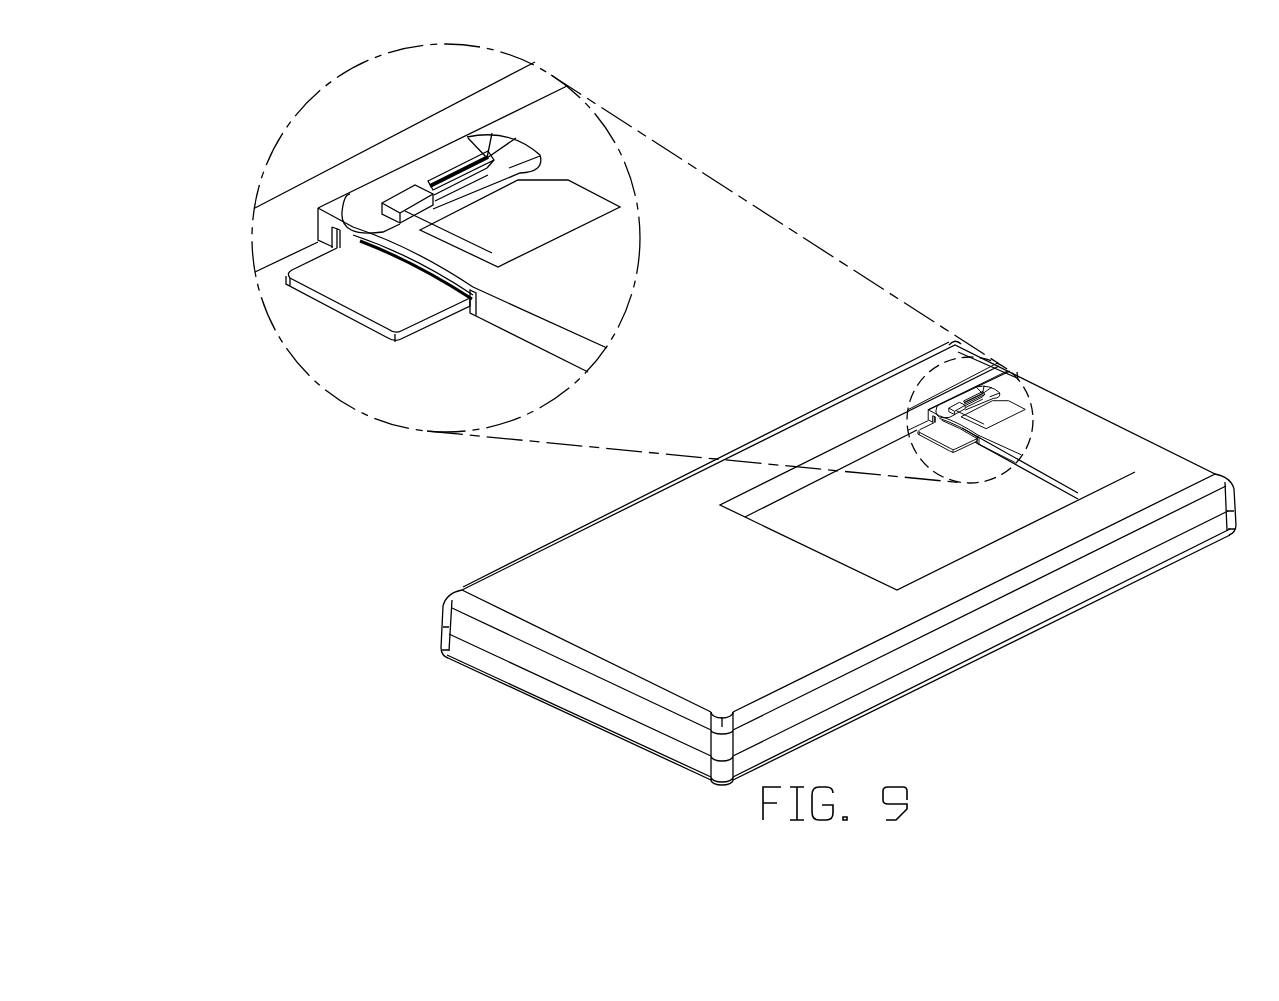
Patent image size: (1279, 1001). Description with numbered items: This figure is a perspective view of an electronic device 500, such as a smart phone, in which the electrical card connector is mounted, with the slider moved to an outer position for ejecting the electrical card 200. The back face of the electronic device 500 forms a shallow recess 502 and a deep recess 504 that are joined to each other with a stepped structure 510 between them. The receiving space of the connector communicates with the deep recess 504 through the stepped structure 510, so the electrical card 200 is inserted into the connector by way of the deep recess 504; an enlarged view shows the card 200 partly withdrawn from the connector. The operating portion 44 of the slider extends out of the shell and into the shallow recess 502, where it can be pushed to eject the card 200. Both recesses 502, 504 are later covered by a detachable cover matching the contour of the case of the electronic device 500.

The electronic device 500 is at (1085, 596).
The shallow recess 502 is at (1068, 437).
The deep recess 504 is at (923, 545).
The stepped structure 510 is at (1050, 473).
The electrical card 200 is at (388, 300).
The operating portion 44 is at (410, 197).